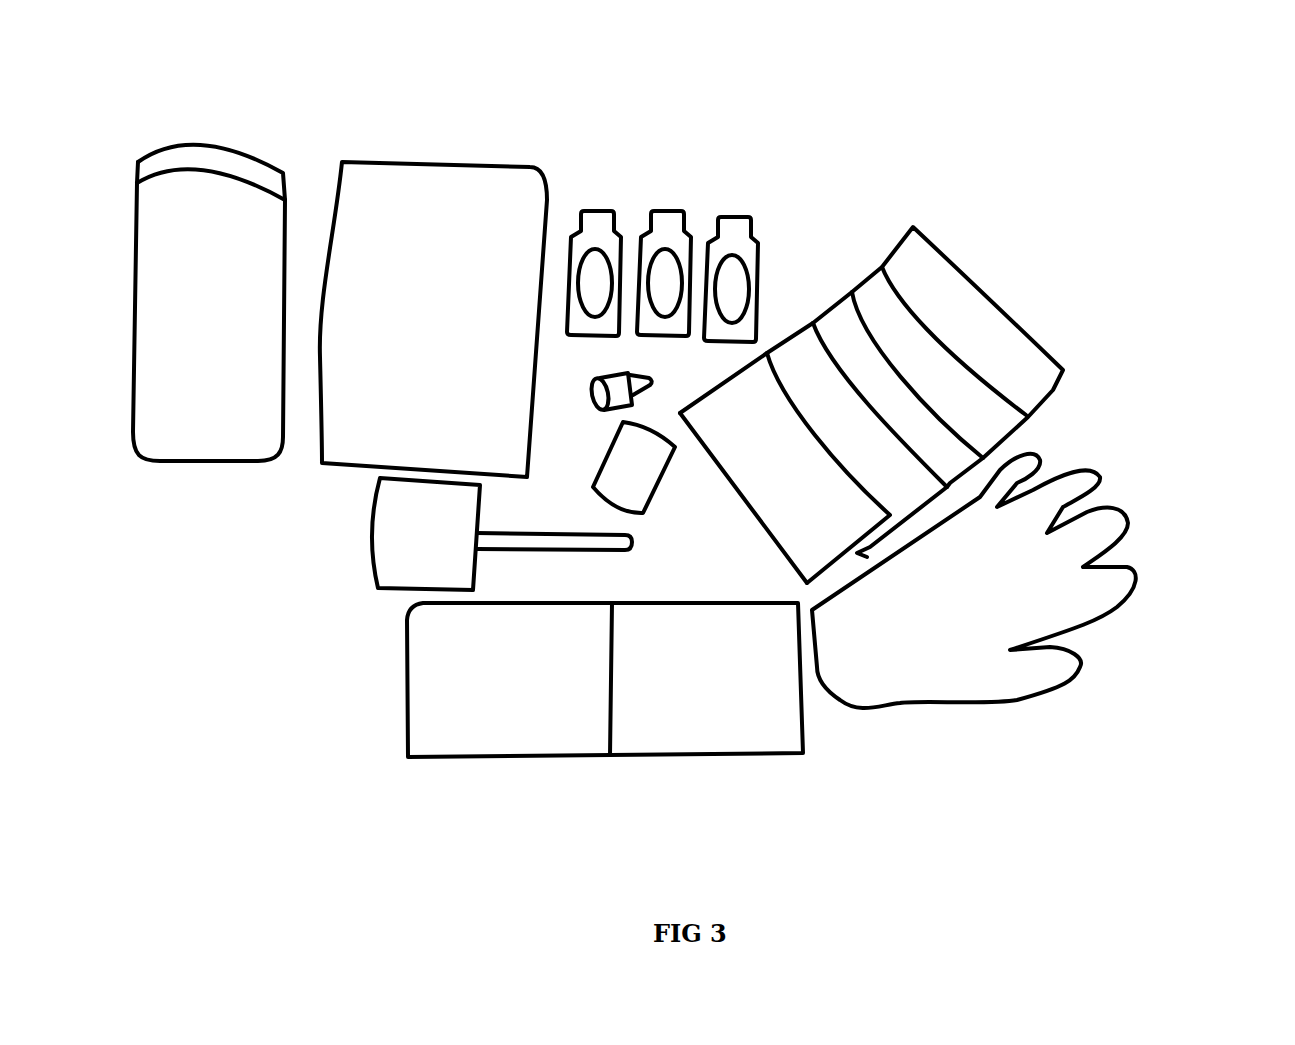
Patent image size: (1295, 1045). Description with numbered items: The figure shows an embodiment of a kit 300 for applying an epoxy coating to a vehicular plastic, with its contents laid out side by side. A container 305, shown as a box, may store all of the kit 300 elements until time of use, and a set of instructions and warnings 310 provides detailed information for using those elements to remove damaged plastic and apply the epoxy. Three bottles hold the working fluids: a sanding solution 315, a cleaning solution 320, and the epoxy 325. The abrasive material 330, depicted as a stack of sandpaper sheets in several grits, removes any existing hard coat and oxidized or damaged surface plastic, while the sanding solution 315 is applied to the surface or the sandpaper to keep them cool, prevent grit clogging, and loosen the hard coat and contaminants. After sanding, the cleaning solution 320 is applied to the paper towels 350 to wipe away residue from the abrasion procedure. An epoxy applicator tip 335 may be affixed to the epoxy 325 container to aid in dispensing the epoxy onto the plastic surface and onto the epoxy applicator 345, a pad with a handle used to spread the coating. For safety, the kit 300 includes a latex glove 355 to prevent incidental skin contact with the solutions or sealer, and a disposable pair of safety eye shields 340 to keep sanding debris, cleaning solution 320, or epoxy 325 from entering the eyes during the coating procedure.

The kit 300 is at (1135, 105).
The container 305 is at (190, 142).
The set of instructions and warnings 310 is at (473, 162).
The sanding solution 315 is at (595, 210).
The cleaning solution 320 is at (670, 210).
The epoxy 325 is at (730, 218).
The abrasive material 330 is at (1017, 318).
The epoxy applicator tip 335 is at (633, 373).
The safety eye shields 340 is at (648, 507).
The epoxy applicator 345 is at (377, 567).
The paper towels 350 is at (405, 722).
The latex glove 355 is at (1080, 670).